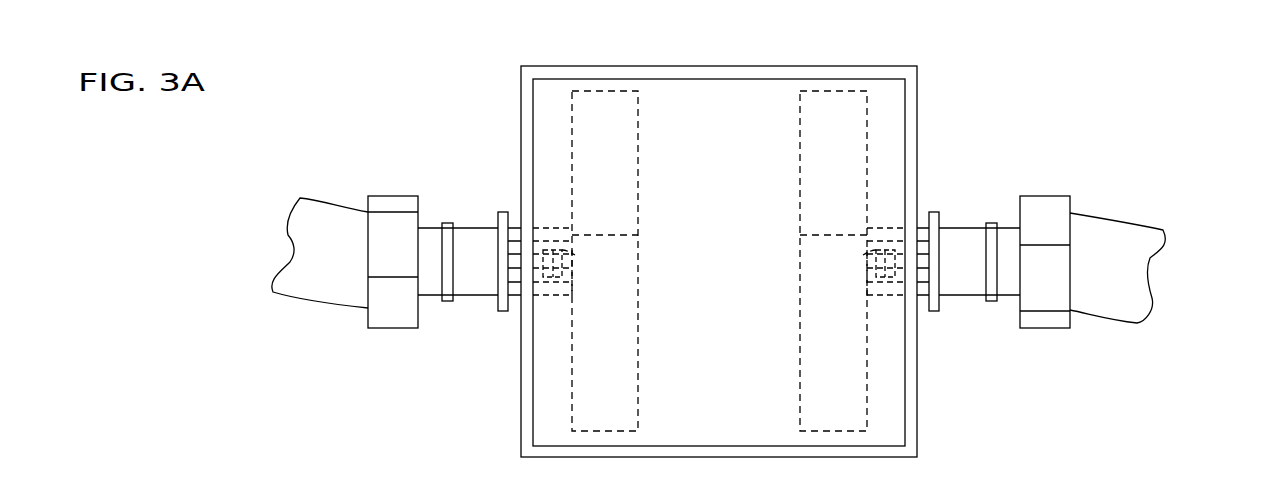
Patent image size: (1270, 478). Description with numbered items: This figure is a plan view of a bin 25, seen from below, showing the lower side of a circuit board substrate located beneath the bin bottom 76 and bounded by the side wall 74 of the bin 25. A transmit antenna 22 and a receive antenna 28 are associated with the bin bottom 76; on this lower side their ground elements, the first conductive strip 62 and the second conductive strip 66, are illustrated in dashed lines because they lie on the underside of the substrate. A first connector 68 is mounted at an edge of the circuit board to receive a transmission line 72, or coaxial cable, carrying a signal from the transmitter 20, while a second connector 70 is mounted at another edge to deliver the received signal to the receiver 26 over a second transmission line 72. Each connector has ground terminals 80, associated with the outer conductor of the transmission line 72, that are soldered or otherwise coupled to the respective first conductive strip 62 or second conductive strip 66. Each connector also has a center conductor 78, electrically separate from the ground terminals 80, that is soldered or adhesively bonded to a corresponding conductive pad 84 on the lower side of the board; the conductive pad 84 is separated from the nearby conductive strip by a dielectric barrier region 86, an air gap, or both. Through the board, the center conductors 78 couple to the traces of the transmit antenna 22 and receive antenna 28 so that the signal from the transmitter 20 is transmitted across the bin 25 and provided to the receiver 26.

The side wall 74 is at (665, 66).
The bin 25 is at (920, 95).
The transmit antenna 22 is at (605, 142).
The receive antenna 28 is at (835, 142).
The first conductive strip 62 is at (612, 237).
The second conductive strip 66 is at (827, 237).
The bin bottom 76 is at (690, 297).
The first connector 68 is at (467, 227).
The second connector 70 is at (968, 227).
The transmission line 72 is at (337, 207).
The ground terminals 80 is at (549, 227).
The center conductor 78 is at (545, 280).
The conductive pad 84 is at (572, 262).
The dielectric barrier region 86 is at (558, 250).
The transmitter 20 is at (278, 238).
The receiver 26 is at (1153, 282).